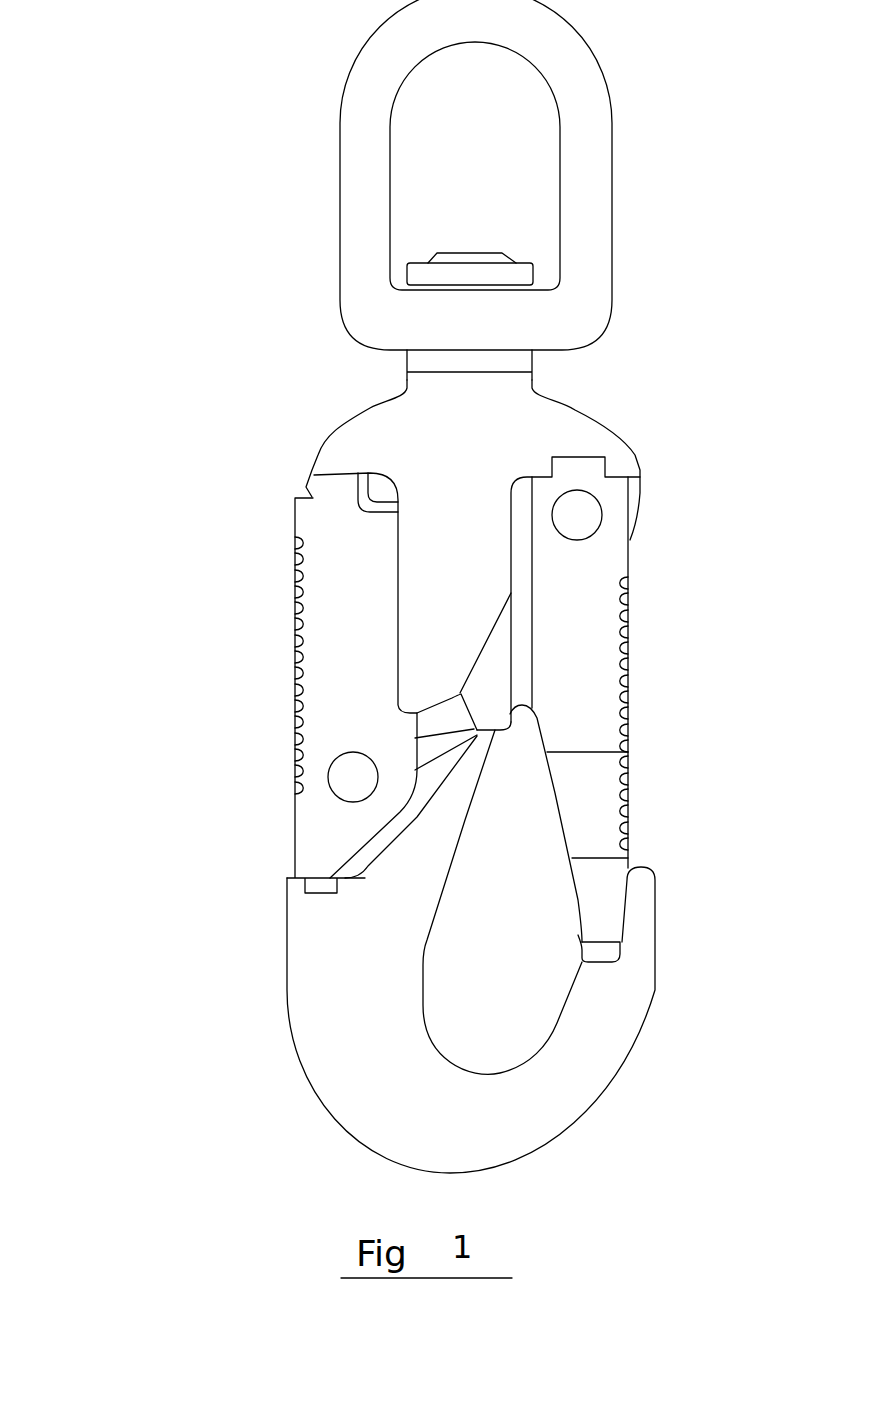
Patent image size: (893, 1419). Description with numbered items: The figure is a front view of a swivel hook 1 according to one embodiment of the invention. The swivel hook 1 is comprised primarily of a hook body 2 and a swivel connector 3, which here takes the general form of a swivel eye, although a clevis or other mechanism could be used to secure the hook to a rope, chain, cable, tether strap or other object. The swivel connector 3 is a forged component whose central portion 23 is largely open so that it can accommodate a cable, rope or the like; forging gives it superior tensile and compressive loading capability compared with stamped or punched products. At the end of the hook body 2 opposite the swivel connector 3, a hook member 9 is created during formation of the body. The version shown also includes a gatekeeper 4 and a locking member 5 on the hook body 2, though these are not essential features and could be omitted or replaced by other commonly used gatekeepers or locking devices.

The swivel hook 1 is at (128, 582).
The hook body 2 is at (503, 433).
The swivel connector 3 is at (578, 133).
The gatekeeper 4 is at (583, 610).
The locking member 5 is at (337, 680).
The hook member 9 is at (537, 1082).
The central portion 23 is at (487, 169).